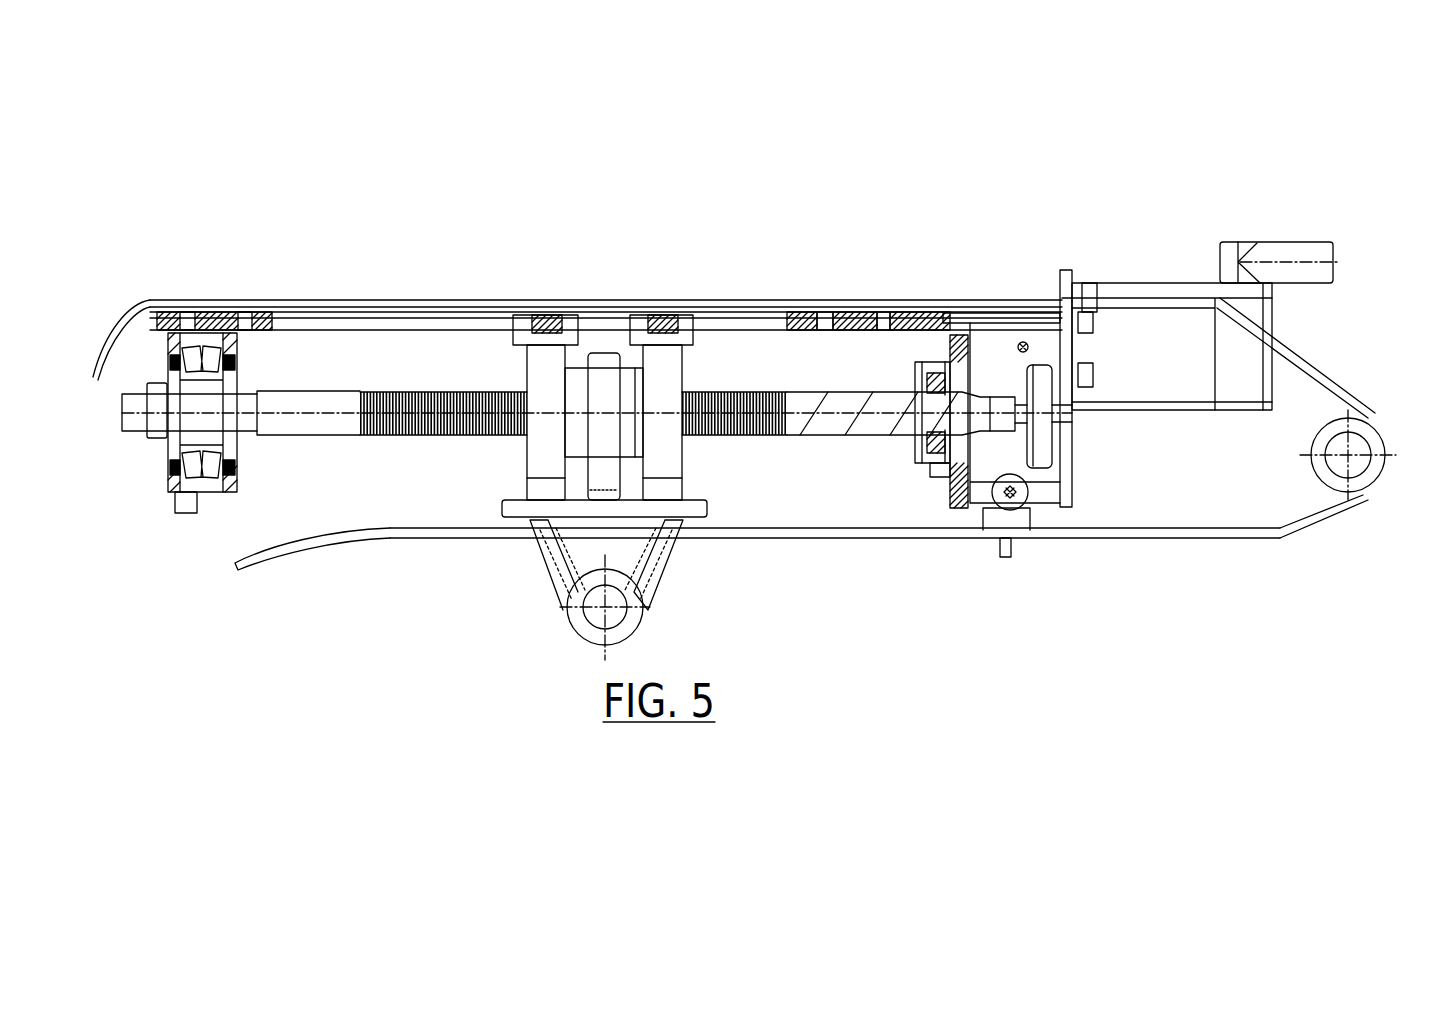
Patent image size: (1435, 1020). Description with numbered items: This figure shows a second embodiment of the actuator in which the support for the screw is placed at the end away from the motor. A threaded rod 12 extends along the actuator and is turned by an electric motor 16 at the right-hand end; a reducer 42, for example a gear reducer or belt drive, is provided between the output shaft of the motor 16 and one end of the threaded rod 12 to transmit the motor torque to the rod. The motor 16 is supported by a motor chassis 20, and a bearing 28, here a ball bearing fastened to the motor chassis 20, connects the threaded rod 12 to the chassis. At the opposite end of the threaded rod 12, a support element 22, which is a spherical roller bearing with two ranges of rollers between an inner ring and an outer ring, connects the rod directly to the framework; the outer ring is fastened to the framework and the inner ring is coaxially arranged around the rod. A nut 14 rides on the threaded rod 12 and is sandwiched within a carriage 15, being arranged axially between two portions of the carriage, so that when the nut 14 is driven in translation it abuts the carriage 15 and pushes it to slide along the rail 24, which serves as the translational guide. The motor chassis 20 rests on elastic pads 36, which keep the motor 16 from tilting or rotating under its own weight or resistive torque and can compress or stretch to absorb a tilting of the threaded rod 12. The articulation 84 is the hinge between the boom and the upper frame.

The threaded rod 12 is at (803, 437).
The nut 14 is at (612, 300).
The carriage 15 is at (683, 373).
The electric motor 16 is at (1167, 346).
The motor chassis 20 is at (1047, 492).
The support element 22 is at (152, 487).
The rail 24 is at (365, 300).
The bearing 28 is at (916, 500).
The elastic pads 36 is at (983, 515).
The reducer 42 is at (1004, 361).
The articulation 84 is at (1390, 457).